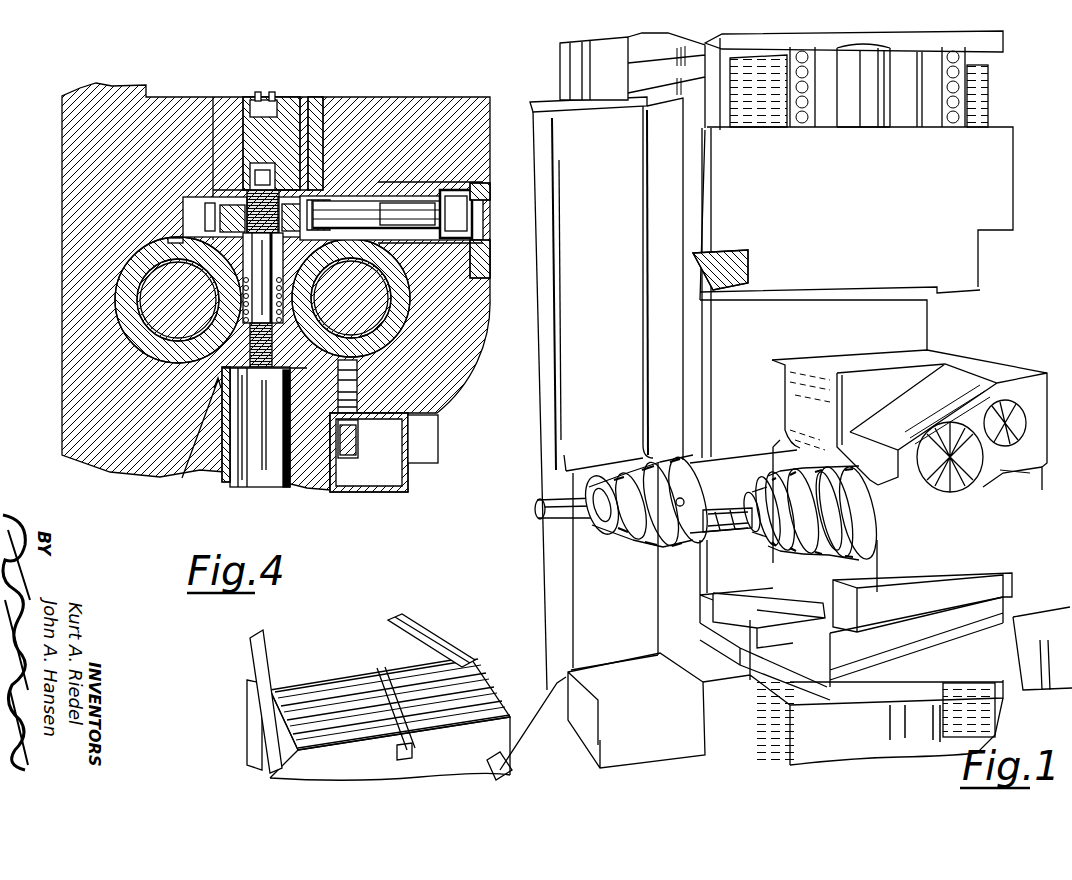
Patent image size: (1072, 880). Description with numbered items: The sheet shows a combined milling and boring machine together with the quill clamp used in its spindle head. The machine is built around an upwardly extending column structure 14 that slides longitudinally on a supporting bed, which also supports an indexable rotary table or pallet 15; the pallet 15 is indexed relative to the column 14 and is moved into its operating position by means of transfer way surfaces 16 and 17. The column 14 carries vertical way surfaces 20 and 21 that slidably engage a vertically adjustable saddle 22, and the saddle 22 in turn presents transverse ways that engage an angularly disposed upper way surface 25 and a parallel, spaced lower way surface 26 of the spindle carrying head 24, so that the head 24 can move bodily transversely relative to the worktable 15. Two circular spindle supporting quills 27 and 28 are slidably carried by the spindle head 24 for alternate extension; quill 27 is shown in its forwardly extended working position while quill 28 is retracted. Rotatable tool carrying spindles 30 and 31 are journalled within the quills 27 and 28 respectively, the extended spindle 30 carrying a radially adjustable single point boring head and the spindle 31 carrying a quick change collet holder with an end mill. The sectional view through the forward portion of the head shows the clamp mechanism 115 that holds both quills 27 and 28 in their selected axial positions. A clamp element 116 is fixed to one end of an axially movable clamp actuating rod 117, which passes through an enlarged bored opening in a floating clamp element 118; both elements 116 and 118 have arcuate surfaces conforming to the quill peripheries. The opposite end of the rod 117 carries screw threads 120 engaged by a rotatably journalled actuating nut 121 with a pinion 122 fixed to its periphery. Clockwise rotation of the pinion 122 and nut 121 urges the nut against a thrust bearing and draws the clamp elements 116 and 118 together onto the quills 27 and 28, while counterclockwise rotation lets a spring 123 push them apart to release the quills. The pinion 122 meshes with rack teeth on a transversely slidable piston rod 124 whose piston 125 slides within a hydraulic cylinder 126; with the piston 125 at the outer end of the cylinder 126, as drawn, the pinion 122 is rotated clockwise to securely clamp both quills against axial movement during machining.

In FIG. 1, the column structure 14 is at (574, 425).
In FIG. 1, the indexable rotary table or pallet 15 is at (282, 729).
In FIG. 1, the transfer way surface 16 is at (266, 650).
In FIG. 1, the transfer way surface 17 is at (406, 631).
In FIG. 1, the vertical way surface 20 is at (798, 739).
In FIG. 1, the vertical way surface 21 is at (970, 737).
In FIG. 1, the vertically adjustable saddle 22 is at (915, 630).
In FIG. 1, the spindle carrying head 24 is at (922, 326).
In FIG. 1, the upper way surface 25 is at (735, 272).
In FIG. 1, the lower way surface 26 is at (798, 638).
In FIG. 4, the spindle supporting quill 27 is at (122, 313).
In FIG. 1, the spindle supporting quill 27 is at (718, 462).
In FIG. 4, the spindle supporting quill 28 is at (407, 293).
In FIG. 1, the spindle supporting quill 28 is at (852, 522).
In FIG. 1, the tool carrying spindle 30 is at (666, 540).
In FIG. 1, the tool carrying spindle 31 is at (810, 548).
In FIG. 4, the clamp mechanism 115 is at (182, 474).
In FIG. 4, the clamp element 116 is at (287, 391).
In FIG. 4, the clamp actuating rod 117 is at (263, 278).
In FIG. 4, the floating clamp element 118 is at (376, 209).
In FIG. 4, the screw threads 120 is at (222, 150).
In FIG. 4, the actuating nut 121 is at (300, 194).
In FIG. 4, the pinion 122 is at (212, 203).
In FIG. 4, the spring 123 is at (215, 366).
In FIG. 4, the piston rod 124 is at (437, 218).
In FIG. 4, the piston 125 is at (462, 210).
In FIG. 4, the hydraulic cylinder 126 is at (424, 202).